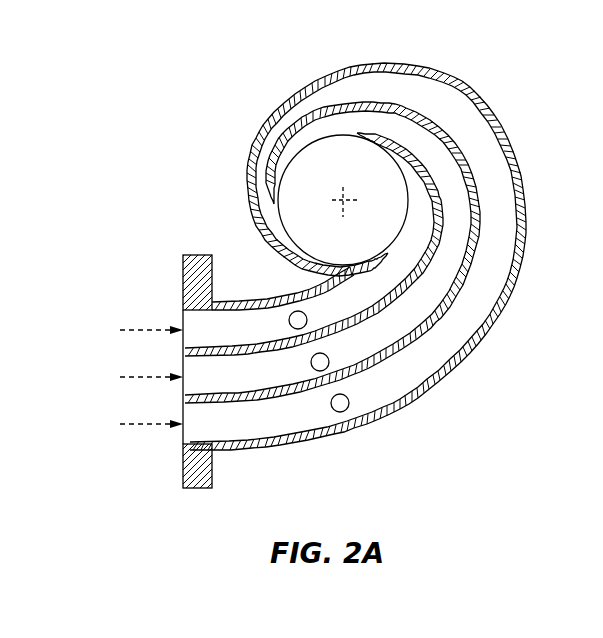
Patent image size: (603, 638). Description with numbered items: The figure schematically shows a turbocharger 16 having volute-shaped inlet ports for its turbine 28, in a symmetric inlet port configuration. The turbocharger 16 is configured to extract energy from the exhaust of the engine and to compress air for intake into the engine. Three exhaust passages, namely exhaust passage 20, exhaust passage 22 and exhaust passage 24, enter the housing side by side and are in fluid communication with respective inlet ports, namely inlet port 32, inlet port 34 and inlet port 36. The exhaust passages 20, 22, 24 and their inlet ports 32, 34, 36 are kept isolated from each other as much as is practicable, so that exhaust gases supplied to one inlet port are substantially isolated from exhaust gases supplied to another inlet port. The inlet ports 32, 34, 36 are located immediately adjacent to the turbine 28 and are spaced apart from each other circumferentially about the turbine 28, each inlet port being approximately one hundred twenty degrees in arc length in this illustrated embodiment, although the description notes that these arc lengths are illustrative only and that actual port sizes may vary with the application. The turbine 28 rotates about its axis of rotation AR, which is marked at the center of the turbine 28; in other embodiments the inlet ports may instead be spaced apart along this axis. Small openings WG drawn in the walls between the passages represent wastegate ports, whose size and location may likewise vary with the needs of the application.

The turbocharger 16 is at (190, 72).
The exhaust passage 20 is at (148, 427).
The exhaust passage 22 is at (148, 380).
The exhaust passage 24 is at (148, 333).
The turbine 28 is at (356, 249).
The inlet port 32 is at (273, 220).
The inlet port 34 is at (347, 130).
The inlet port 36 is at (413, 212).
The axis of rotation AR is at (332, 200).
The wastegate ports WG is at (290, 318).